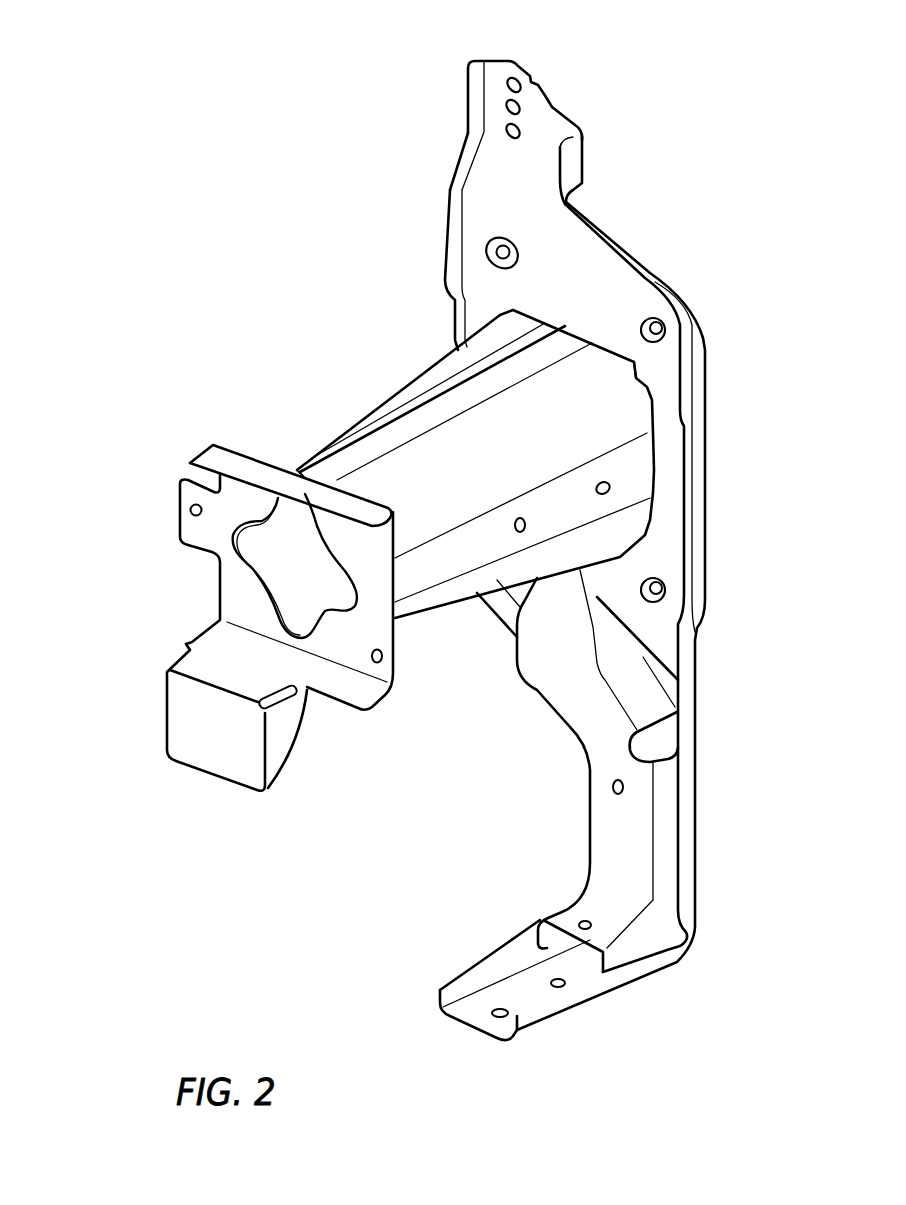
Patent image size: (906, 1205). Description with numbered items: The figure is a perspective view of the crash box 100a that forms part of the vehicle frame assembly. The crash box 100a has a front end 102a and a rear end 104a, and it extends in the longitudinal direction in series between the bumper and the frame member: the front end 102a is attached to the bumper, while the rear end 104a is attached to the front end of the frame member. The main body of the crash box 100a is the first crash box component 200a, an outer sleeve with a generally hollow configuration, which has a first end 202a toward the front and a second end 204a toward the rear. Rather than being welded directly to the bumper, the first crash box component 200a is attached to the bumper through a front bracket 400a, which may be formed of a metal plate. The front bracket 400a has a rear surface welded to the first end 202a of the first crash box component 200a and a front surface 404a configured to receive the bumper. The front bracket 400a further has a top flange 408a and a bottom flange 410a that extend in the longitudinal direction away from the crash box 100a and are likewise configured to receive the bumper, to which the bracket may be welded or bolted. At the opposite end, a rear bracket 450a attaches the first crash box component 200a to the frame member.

The crash box 100a is at (377, 353).
The front end 102a is at (204, 573).
The rear end 104a is at (620, 226).
The first crash box component 200a is at (365, 417).
The first end 202a is at (297, 473).
The second end 204a is at (567, 325).
The front bracket 400a is at (177, 518).
The front surface 404a is at (345, 643).
The top flange 408a is at (205, 462).
The bottom flange 410a is at (363, 695).
The rear bracket 450a is at (498, 67).